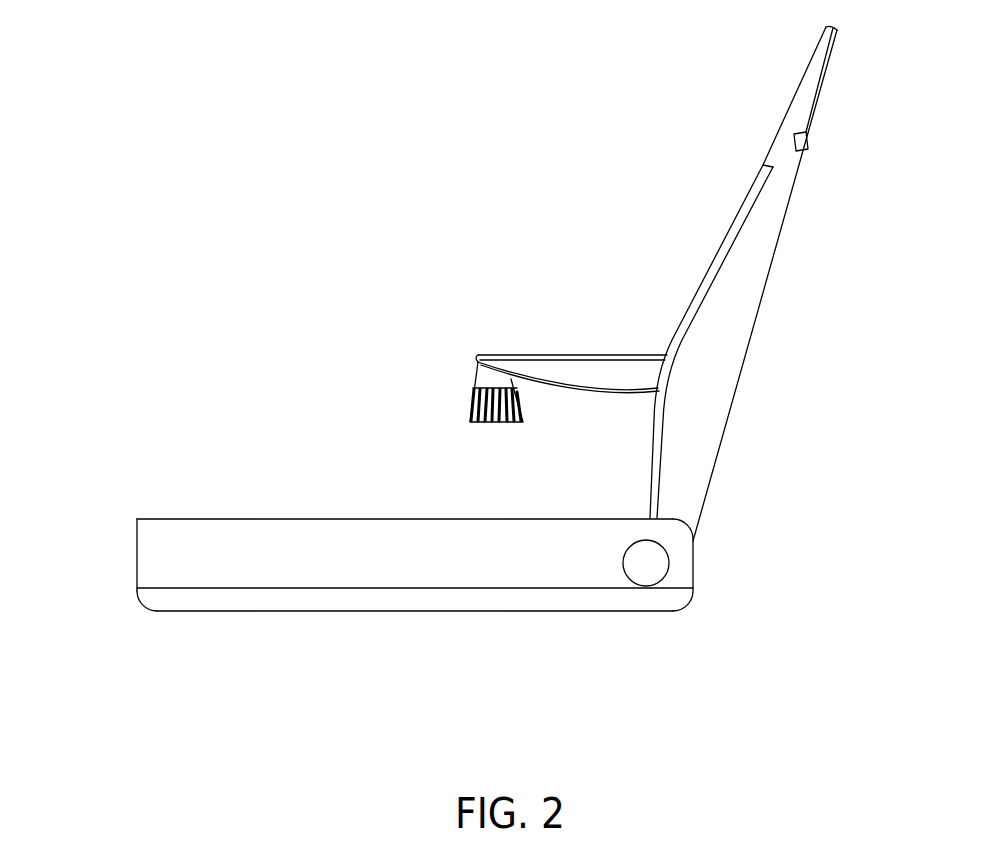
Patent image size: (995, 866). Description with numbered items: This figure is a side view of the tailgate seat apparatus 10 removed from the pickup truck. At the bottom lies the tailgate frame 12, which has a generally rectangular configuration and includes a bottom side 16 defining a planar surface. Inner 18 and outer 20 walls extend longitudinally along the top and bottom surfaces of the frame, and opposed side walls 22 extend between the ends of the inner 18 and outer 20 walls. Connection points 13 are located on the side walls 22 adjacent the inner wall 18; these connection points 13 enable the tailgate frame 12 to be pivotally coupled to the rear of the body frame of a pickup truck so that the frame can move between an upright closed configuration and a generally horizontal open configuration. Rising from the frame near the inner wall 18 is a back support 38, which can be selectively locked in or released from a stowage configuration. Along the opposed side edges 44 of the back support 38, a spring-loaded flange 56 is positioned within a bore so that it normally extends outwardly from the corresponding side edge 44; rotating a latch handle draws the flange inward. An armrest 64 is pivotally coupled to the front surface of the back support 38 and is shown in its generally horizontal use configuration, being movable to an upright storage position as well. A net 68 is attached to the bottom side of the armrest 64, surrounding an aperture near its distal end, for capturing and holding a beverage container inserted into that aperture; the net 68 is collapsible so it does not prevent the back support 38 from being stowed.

The tailgate seat apparatus 10 is at (338, 62).
The tailgate frame 12 is at (204, 474).
The connection points 13 is at (669, 563).
The bottom side 16 is at (242, 612).
The inner wall 18 is at (693, 578).
The outer wall 20 is at (137, 553).
The side walls 22 is at (337, 559).
The back support 38 is at (722, 63).
The side edge 44 is at (742, 342).
The spring-loaded flange 56 is at (808, 142).
The armrest 64 is at (572, 354).
The net 68 is at (477, 383).